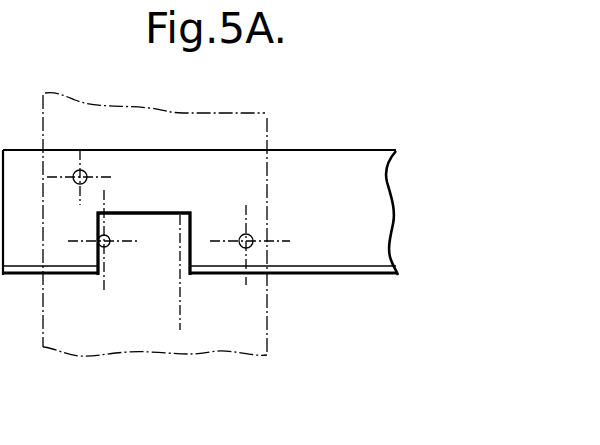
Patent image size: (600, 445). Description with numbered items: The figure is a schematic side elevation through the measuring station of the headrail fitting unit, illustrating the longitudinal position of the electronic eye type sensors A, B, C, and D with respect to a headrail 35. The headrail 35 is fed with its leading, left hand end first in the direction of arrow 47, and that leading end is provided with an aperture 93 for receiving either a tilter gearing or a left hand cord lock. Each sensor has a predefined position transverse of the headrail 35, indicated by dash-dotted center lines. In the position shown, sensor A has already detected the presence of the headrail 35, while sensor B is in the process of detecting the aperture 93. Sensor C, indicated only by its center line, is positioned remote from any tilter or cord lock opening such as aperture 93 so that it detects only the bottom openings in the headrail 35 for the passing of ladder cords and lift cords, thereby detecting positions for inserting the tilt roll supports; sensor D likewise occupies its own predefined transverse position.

The headrail 35 is at (183, 118).
The arrow 47 is at (272, 195).
The aperture 93 is at (150, 252).
The sensor A is at (86, 171).
The sensor B is at (108, 246).
The sensor C is at (181, 280).
The sensor D is at (252, 248).